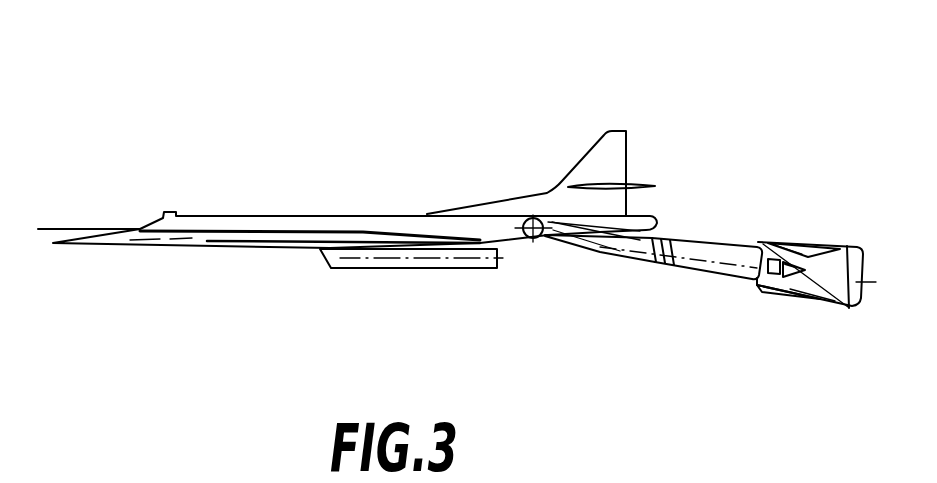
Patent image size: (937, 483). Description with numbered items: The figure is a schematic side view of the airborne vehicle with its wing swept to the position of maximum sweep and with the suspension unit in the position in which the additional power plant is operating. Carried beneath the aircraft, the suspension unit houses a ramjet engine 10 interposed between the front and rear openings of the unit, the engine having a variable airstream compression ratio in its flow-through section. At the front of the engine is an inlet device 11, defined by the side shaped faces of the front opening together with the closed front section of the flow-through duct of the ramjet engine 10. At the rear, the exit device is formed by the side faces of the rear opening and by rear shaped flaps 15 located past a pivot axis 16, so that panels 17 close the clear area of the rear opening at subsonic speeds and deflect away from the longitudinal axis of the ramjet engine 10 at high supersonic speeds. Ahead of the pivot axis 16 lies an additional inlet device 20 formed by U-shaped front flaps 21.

The ramjet engine 10 is at (711, 267).
The inlet device 11 is at (674, 265).
The rear shaped flaps 15 is at (848, 308).
The pivot axis 16 is at (808, 243).
The panels 17 is at (817, 300).
The additional inlet device 20 is at (755, 247).
The U-shaped front flaps 21 is at (792, 241).